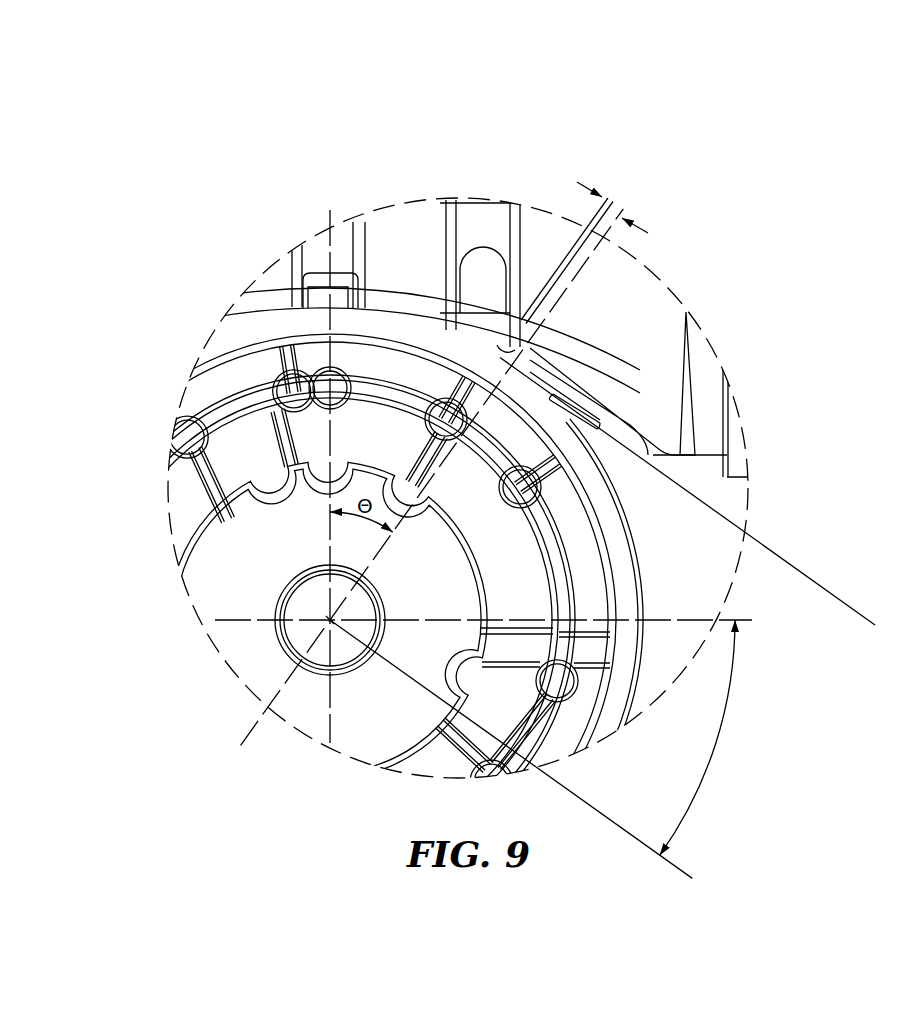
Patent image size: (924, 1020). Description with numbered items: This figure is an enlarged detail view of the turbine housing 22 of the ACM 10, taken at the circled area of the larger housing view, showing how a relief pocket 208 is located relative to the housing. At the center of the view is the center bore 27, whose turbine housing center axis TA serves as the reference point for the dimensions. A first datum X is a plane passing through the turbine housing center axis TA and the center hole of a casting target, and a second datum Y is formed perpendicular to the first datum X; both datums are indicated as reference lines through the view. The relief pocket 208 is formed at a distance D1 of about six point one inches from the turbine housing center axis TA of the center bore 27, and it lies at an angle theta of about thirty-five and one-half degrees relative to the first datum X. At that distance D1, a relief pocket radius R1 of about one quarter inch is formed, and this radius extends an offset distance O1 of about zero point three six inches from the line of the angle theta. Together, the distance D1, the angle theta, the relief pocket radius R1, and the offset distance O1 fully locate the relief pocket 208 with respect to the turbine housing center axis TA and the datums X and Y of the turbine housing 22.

The ACM 10 is at (630, 203).
The relief pocket 208 is at (455, 303).
The offset distance O1 is at (640, 227).
The relief pocket radius R1 is at (503, 352).
The turbine housing center axis TA is at (330, 620).
The center bore 27 is at (349, 672).
The first datum X is at (330, 723).
The second datum Y is at (700, 620).
The distance D1 is at (862, 620).
The turbine housing 22 is at (208, 783).